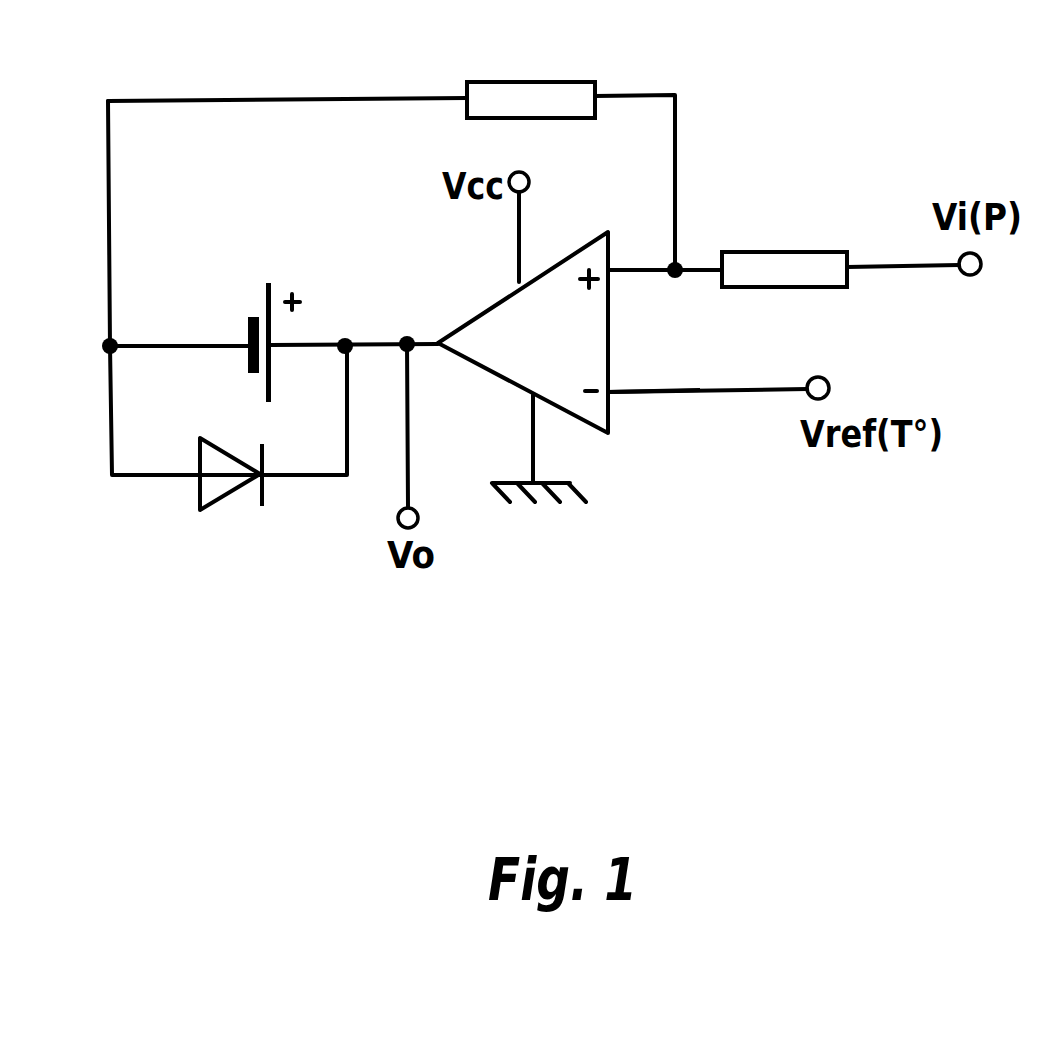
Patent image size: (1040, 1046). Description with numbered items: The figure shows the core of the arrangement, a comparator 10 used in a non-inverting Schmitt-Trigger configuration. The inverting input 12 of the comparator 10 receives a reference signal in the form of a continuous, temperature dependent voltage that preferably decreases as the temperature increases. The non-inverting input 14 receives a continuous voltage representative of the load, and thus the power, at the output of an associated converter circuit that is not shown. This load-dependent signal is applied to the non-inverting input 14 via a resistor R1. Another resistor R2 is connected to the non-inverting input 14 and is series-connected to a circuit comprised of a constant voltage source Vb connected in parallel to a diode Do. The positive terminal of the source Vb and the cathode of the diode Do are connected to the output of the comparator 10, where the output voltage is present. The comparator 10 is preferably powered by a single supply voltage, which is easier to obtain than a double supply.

The comparator 10 is at (642, 475).
The inverting input 12 is at (612, 392).
The non-inverting input 14 is at (620, 270).
The resistor R1 is at (772, 272).
The resistor R2 is at (555, 45).
The constant voltage source Vb is at (237, 332).
The diode Do is at (208, 483).